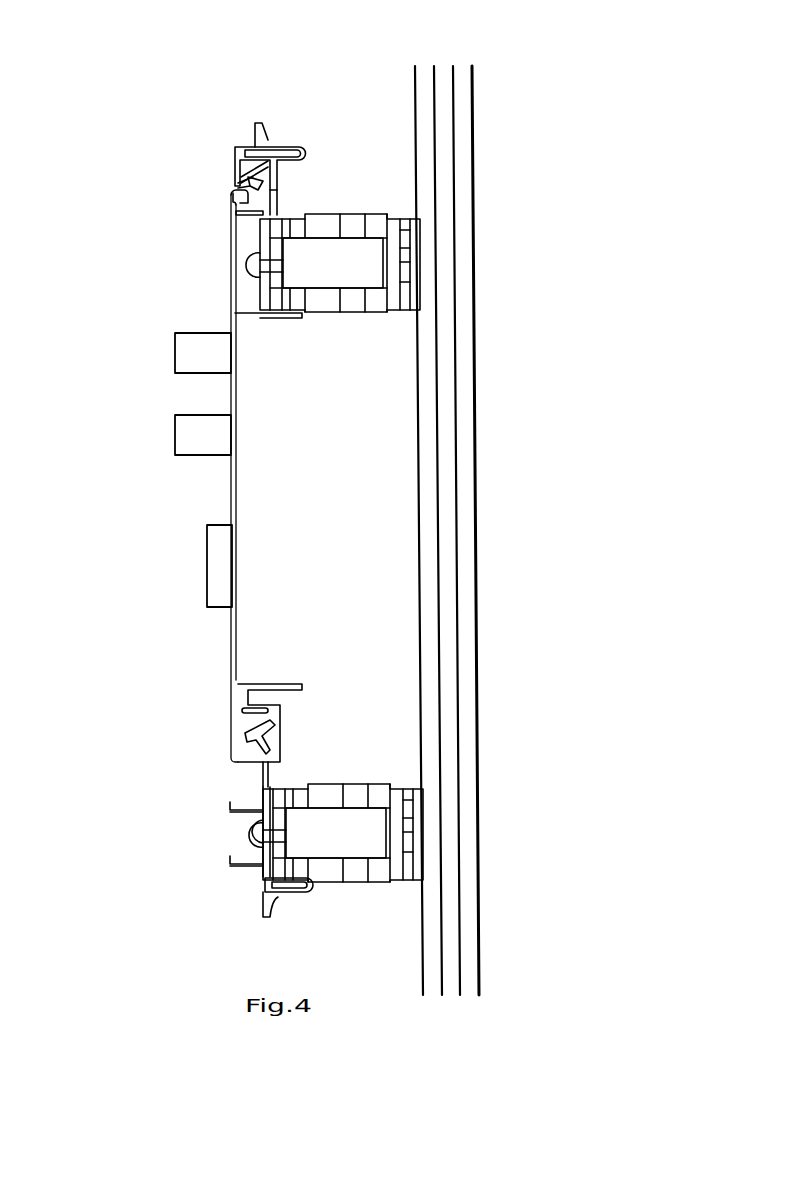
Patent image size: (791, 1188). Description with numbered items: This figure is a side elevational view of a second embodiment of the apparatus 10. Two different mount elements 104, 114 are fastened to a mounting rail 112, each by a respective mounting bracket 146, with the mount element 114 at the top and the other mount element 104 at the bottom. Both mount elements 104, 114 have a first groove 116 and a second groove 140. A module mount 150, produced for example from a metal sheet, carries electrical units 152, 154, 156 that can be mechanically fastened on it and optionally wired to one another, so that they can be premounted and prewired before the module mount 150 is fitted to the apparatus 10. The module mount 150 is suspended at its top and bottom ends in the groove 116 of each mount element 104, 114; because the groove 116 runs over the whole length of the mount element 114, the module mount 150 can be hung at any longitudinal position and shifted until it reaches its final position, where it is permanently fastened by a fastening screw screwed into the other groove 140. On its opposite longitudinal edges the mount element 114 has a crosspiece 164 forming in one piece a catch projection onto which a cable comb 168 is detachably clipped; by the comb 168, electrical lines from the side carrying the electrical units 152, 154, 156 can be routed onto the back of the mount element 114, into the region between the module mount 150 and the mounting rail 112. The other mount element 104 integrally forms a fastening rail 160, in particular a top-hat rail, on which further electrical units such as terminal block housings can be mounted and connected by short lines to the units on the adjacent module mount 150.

The apparatus 10 is at (265, 82).
The mount element 104 is at (318, 745).
The mounting rail 112 is at (461, 401).
The mount element 114 is at (305, 187).
The first groove 116 is at (253, 177).
The second groove 140 is at (240, 212).
The mounting bracket 146 is at (372, 313).
The module mount 150 is at (238, 491).
The electrical unit 152 is at (190, 357).
The electrical unit 154 is at (200, 435).
The electrical unit 156 is at (220, 567).
The fastening rail 160 is at (253, 857).
The crosspiece 164 is at (245, 148).
The cable comb 168 is at (284, 140).